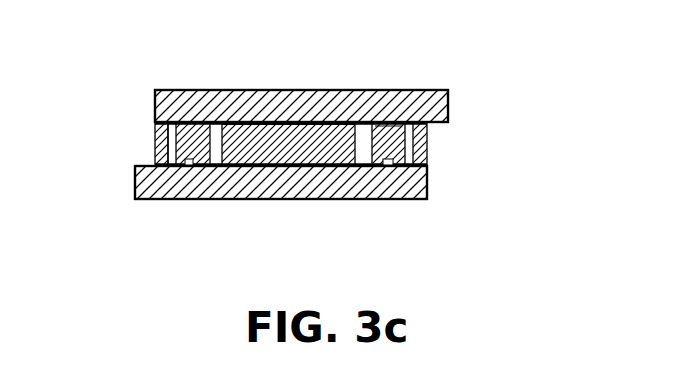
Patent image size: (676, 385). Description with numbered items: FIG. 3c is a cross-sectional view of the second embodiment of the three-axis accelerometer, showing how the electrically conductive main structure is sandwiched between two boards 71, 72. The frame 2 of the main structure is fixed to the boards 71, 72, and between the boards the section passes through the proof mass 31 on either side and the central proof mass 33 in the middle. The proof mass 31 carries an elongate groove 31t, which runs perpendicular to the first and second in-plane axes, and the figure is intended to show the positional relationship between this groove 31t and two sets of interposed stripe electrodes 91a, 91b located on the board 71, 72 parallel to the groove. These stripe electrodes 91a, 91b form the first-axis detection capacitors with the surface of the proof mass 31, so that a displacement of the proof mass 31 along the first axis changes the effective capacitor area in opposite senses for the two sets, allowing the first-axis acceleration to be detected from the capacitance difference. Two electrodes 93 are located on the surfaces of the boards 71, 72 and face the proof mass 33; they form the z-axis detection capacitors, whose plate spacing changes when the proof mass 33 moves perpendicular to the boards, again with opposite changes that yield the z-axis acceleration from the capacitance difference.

The frame 2 is at (155, 148).
The proof mass 31 is at (213, 127).
The elongate groove 31t is at (390, 127).
The proof mass 33 is at (282, 122).
The board 71 is at (419, 188).
The board 72 is at (436, 103).
The stripe electrode 91a is at (180, 127).
The stripe electrode 91b is at (198, 166).
The electrode 93 is at (307, 130).